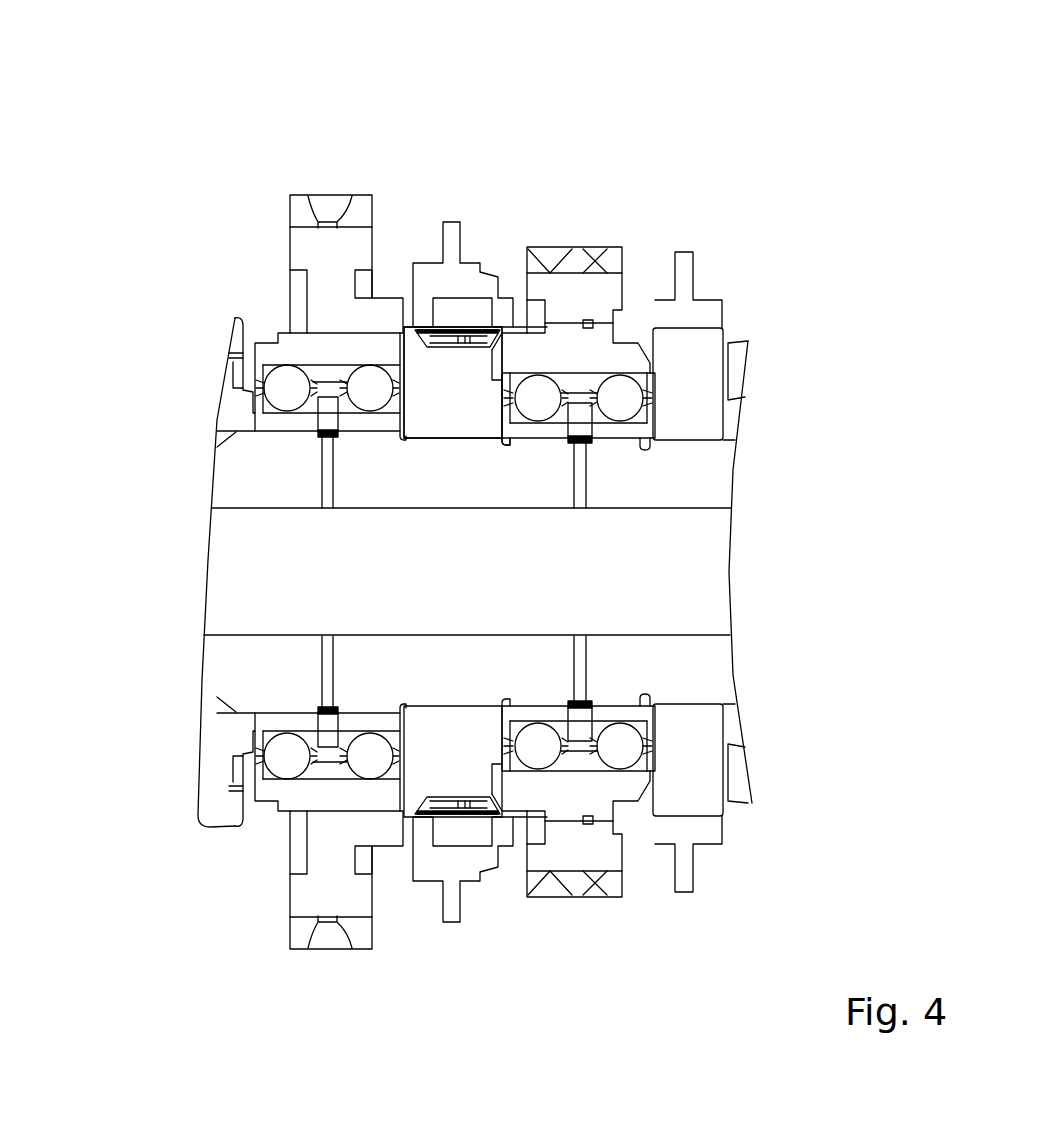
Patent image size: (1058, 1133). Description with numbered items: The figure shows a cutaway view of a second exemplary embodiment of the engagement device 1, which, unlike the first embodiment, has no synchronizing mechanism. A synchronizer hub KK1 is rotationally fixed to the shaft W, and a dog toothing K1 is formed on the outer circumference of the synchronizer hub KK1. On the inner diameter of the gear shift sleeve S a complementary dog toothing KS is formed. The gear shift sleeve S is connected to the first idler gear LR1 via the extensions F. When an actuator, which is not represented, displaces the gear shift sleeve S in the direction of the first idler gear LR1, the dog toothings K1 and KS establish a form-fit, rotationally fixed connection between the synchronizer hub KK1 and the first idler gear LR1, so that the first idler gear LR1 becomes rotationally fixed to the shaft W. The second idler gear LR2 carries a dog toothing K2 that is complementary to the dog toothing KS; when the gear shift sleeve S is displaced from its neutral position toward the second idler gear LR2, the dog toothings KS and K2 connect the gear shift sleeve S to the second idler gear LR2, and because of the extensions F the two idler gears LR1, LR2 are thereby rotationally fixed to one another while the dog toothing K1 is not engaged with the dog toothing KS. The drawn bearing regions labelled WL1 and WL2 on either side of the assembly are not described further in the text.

The engagement device 1 is at (170, 149).
The first idler gear LR1 is at (333, 247).
The gear shift sleeve S is at (428, 282).
The dog toothing KS is at (478, 340).
The extensions F is at (512, 338).
The dog toothing K2 is at (512, 347).
The dog toothing K1 is at (413, 340).
The second idler gear LR2 is at (598, 296).
The second shaft bearing WL2 is at (672, 380).
The first shaft bearing WL1 is at (244, 411).
The shaft W is at (697, 473).
The synchronizer hub KK1 is at (440, 408).